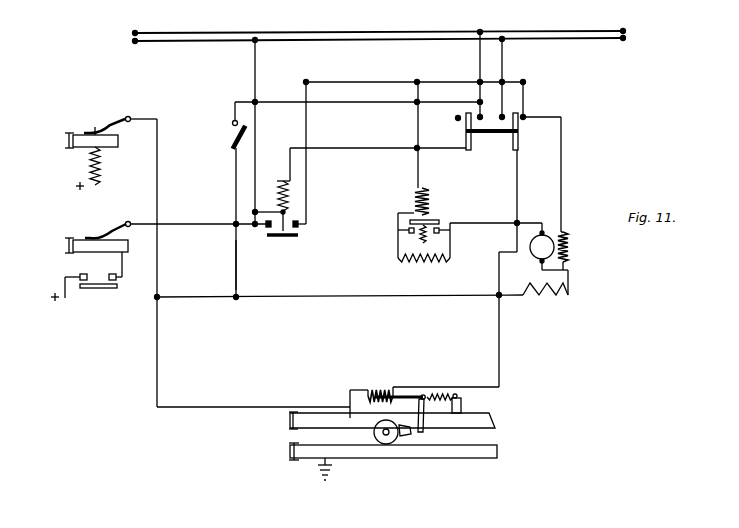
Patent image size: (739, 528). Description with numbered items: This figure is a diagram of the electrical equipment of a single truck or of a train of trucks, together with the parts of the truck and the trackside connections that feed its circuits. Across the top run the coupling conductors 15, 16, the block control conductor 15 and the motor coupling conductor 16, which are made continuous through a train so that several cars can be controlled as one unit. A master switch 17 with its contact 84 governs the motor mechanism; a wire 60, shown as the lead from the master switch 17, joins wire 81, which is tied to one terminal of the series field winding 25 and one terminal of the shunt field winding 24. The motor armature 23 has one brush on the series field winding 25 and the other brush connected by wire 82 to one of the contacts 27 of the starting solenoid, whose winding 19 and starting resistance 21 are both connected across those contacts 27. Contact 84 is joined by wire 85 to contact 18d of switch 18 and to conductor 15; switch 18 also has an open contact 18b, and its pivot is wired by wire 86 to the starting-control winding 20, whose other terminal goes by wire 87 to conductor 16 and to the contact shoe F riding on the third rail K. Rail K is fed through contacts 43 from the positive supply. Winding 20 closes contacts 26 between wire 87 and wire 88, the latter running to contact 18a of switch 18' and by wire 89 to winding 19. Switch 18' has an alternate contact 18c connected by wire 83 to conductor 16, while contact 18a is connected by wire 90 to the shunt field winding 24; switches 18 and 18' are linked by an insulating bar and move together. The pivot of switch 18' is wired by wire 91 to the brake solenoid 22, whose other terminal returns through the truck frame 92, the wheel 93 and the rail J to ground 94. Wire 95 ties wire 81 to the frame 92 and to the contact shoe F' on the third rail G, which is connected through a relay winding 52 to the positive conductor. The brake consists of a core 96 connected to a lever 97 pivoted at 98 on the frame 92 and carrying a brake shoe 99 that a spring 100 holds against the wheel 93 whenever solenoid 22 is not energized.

The coupling conductor 15 is at (390, 28).
The coupling conductor 16 is at (390, 39).
The master switch 17 is at (235, 137).
The switch 18 is at (492, 131).
The contact 18a is at (541, 110).
The open contact 18b is at (458, 121).
The alternate contact 18c is at (506, 113).
The contact 18d is at (479, 112).
The switch 18' is at (530, 135).
The starting solenoid winding 19 is at (430, 199).
The starting control winding 20 is at (279, 189).
The starting resistance 21 is at (424, 244).
The brake solenoid 22 is at (383, 388).
The motor armature 23 is at (549, 246).
The shunt field winding 24 is at (571, 244).
The series field winding 25 is at (545, 293).
The contacts 26 is at (282, 232).
The contacts 27 is at (443, 221).
The contacts 43 is at (86, 276).
The relay winding 52 is at (101, 168).
The conductor 60 is at (234, 263).
The wire 81 is at (255, 294).
The wire 82 is at (538, 221).
The wire 83 is at (504, 62).
The contact 84 is at (231, 121).
The wire 85 is at (278, 98).
The wire 86 is at (445, 150).
The wire 87 is at (261, 131).
The wire 88 is at (308, 193).
The wire 89 is at (407, 135).
The wire 90 is at (565, 186).
The wire 91 is at (498, 320).
The truck frame 92 is at (474, 421).
The wheel 93 is at (373, 433).
The ground 94 is at (338, 469).
The wire 95 is at (246, 405).
The core 96 is at (388, 400).
The lever 97 is at (437, 401).
The pivot 98 is at (426, 419).
The brake shoe 99 is at (413, 433).
The spring 100 is at (447, 393).
The contact shoe F is at (175, 219).
The contact shoe F' is at (120, 113).
The third rail G is at (118, 143).
The third rail K is at (128, 246).
The rail J is at (480, 453).